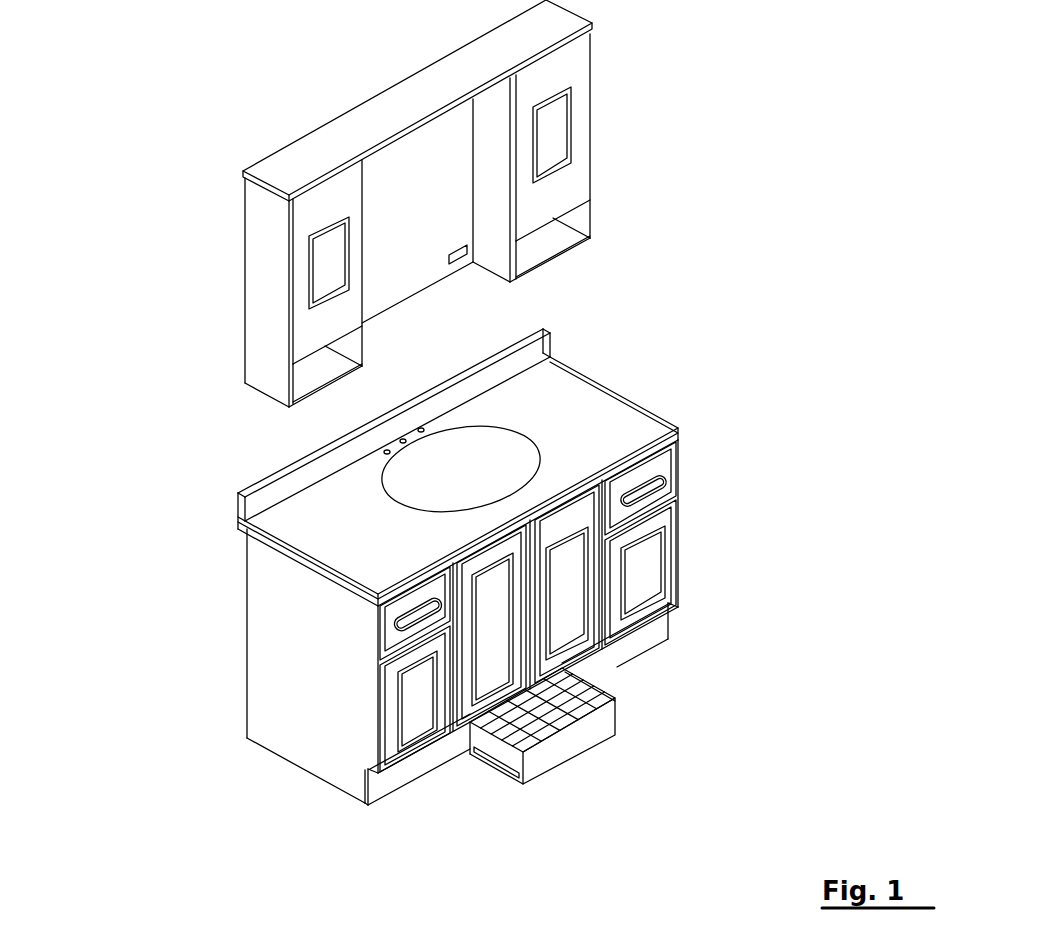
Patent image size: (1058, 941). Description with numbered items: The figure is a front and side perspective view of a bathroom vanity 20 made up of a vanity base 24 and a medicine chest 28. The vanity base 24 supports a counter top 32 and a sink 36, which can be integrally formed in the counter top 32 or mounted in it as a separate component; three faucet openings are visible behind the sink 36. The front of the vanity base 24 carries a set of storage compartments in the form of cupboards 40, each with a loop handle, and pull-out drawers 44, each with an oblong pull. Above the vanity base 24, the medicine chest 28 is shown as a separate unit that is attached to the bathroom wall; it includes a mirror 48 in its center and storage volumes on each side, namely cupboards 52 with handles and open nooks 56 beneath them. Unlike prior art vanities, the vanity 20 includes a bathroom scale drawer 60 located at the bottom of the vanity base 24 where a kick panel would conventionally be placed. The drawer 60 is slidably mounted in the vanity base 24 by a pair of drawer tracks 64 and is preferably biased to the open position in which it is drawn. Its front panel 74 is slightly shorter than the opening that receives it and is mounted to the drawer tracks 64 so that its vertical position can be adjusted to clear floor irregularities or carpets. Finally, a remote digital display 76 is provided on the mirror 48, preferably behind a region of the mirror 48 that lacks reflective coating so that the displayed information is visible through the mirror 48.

The bathroom vanity 20 is at (112, 282).
The vanity base 24 is at (700, 490).
The medicine chest 28 is at (602, 93).
The counter top 32 is at (636, 427).
The sink 36 is at (478, 449).
The cupboards 40 is at (637, 548).
The pull-out drawers 44 is at (403, 621).
The mirror 48 is at (434, 204).
The cupboards 52 is at (313, 318).
The nooks 56 is at (313, 370).
The bathroom scale drawer 60 is at (611, 758).
The drawer tracks 64 is at (500, 761).
The front panel 74 is at (604, 724).
The remote digital display 76 is at (460, 262).